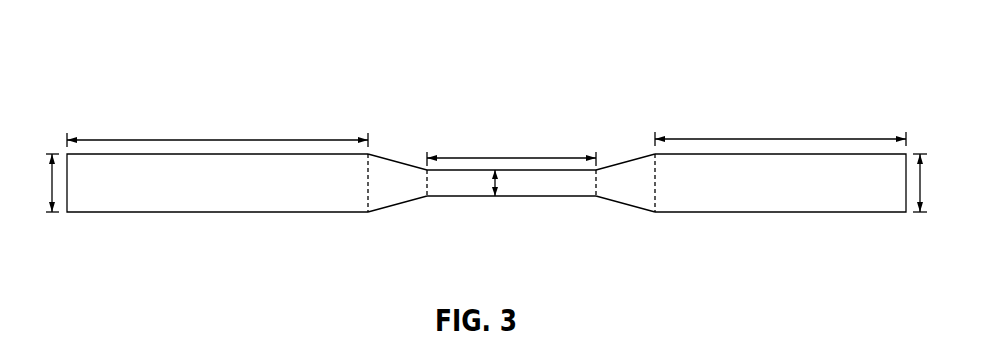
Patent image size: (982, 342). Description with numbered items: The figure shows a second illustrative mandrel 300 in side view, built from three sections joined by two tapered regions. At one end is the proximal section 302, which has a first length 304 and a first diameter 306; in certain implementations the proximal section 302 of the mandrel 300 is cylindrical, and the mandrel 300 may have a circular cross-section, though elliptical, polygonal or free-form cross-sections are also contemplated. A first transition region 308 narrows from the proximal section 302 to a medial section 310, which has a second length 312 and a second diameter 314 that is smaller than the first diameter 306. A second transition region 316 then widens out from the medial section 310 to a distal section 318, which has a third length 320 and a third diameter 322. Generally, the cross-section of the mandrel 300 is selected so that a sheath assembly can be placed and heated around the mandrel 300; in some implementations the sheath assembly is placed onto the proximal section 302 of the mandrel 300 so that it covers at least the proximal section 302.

The mandrel 300 is at (119, 45).
The proximal section 302 is at (230, 213).
The first length 304 is at (207, 140).
The first diameter 306 is at (52, 187).
The first transition region 308 is at (395, 160).
The medial section 310 is at (465, 197).
The second length 312 is at (512, 157).
The second diameter 314 is at (502, 184).
The second transition region 316 is at (615, 160).
The distal section 318 is at (780, 214).
The third length 320 is at (780, 138).
The third diameter 322 is at (922, 183).